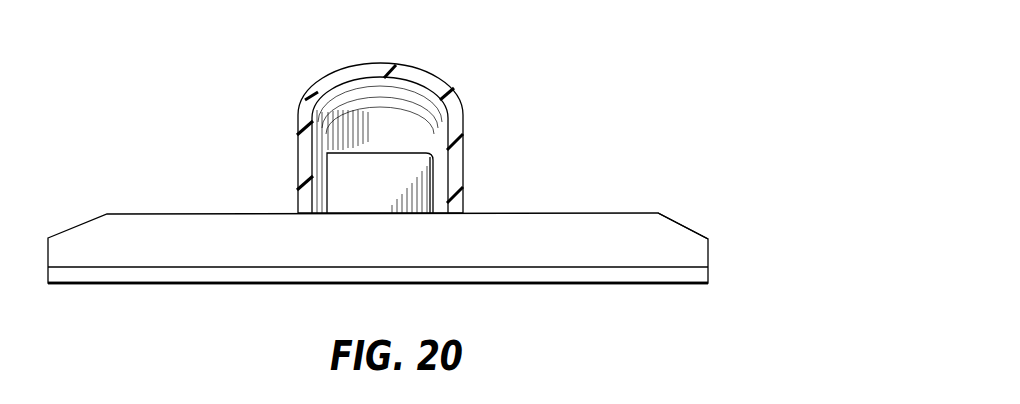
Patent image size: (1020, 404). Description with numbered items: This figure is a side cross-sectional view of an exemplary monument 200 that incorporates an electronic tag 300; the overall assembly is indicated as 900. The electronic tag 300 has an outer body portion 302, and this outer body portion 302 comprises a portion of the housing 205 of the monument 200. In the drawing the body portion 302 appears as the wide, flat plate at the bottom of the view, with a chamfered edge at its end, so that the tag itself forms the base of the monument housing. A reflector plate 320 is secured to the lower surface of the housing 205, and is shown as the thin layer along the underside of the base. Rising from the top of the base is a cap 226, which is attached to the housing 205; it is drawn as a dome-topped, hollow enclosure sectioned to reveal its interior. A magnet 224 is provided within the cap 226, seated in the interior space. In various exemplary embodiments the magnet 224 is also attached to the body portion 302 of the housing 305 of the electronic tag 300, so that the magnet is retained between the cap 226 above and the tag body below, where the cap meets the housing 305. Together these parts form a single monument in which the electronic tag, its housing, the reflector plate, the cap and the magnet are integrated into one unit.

The sensor assembly 900 is at (152, 156).
The magnet 224 is at (352, 162).
The cap 226 is at (436, 80).
The monument 200 is at (572, 78).
The housing 205 is at (575, 119).
The housing of the electronic tag 305 is at (476, 201).
The electronic tag 300 is at (620, 213).
The outer body portion 302 is at (678, 222).
The reflector plate 320 is at (663, 284).